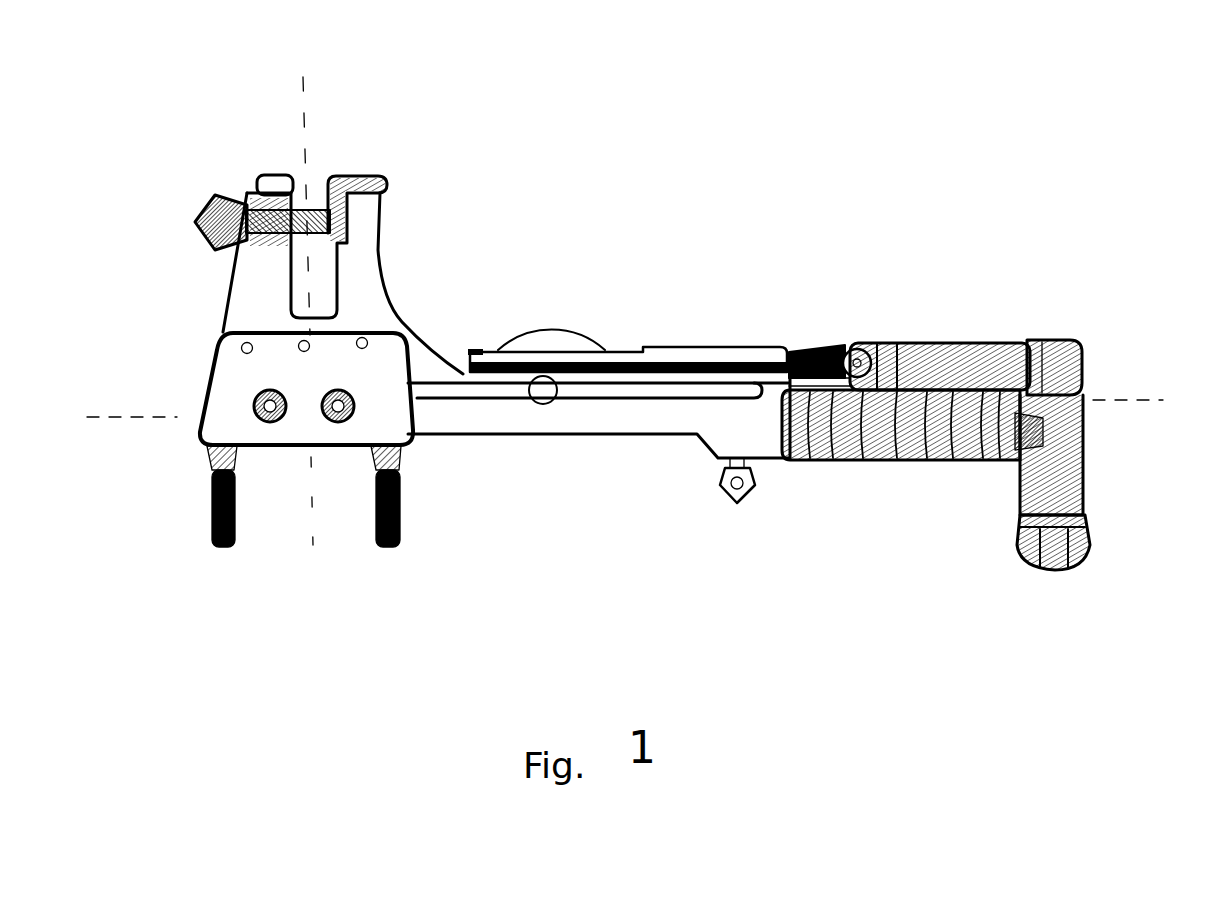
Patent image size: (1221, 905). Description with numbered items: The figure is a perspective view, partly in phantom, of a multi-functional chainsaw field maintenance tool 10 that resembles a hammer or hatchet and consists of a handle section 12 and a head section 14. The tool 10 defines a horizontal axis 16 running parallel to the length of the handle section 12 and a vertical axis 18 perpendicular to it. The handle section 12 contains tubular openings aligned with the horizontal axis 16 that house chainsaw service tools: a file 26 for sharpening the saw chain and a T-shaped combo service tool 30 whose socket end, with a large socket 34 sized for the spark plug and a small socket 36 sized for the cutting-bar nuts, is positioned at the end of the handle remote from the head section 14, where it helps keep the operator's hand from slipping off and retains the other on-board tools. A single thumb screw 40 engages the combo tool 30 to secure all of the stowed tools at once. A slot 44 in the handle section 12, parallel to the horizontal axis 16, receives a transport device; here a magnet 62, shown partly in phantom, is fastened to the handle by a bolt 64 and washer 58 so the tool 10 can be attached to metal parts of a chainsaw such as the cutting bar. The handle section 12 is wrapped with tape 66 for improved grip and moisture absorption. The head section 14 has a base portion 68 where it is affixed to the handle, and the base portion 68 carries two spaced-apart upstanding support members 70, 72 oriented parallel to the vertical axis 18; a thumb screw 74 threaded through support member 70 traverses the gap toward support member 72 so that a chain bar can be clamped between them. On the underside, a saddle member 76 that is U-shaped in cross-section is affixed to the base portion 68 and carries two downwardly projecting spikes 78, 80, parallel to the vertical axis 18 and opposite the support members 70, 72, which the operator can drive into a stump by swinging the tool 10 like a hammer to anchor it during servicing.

The multi-functional chainsaw field maintenance tool 10 is at (659, 52).
The handle section 12 is at (851, 315).
The head section 14 is at (240, 138).
The horizontal axis 16 is at (1157, 398).
The vertical axis 18 is at (312, 545).
The file 26 is at (972, 341).
The combo service tool 30 is at (1085, 475).
The large socket 34 is at (1062, 567).
The small socket 36 is at (1048, 378).
The thumb screw 40 is at (742, 505).
The slot 44 is at (680, 393).
The washer 58 is at (580, 355).
The magnet 62 is at (545, 330).
The bolt 64 is at (553, 404).
The tape 66 is at (912, 440).
The base portion 68 is at (398, 345).
The support member 70 is at (250, 275).
The support member 72 is at (372, 266).
The thumb screw 74 is at (197, 203).
The saddle member 76 is at (217, 417).
The spike 78 is at (213, 525).
The spike 80 is at (402, 510).